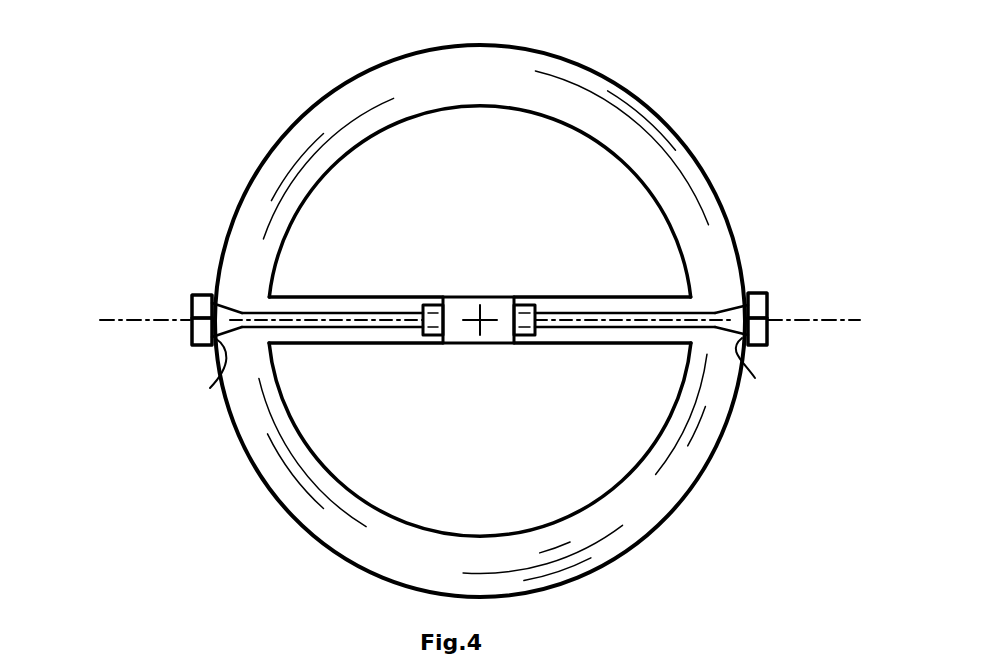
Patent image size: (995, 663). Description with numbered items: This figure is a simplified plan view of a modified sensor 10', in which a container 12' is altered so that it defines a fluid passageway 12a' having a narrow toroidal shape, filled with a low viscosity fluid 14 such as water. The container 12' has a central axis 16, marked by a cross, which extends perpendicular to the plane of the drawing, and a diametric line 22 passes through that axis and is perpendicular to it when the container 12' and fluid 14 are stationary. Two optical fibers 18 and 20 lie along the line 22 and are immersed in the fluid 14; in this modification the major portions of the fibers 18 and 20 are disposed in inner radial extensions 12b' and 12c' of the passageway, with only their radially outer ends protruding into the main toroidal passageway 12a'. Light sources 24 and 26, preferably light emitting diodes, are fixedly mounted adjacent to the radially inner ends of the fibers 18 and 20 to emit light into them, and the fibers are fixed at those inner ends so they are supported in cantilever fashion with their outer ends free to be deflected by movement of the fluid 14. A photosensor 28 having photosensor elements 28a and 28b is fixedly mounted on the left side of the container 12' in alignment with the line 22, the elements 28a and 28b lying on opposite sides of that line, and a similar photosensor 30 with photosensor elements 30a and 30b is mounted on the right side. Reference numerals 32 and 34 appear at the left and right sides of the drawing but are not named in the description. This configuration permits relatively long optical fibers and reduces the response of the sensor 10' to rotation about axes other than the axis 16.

The sensor 10' is at (462, 312).
The container 12' is at (480, 312).
The low viscosity fluid 14 is at (496, 78).
The fluid passageway 12a' is at (621, 126).
The inner radial extension 12b' is at (353, 198).
The inner radial extension 12c' is at (610, 350).
The central axis 16 is at (485, 312).
The optical fiber 18 is at (331, 345).
The optical fiber 20 is at (628, 345).
The diametric line 22 is at (125, 318).
The light source 24 is at (432, 305).
The light source 26 is at (528, 305).
The photosensor 28 is at (201, 278).
The photosensor element 28a is at (192, 300).
The photosensor element 28b is at (192, 336).
The photosensor 30 is at (764, 276).
The photosensor element 30a is at (768, 336).
The photosensor element 30b is at (768, 302).
The left leader 32 is at (203, 381).
The right leader 34 is at (754, 381).